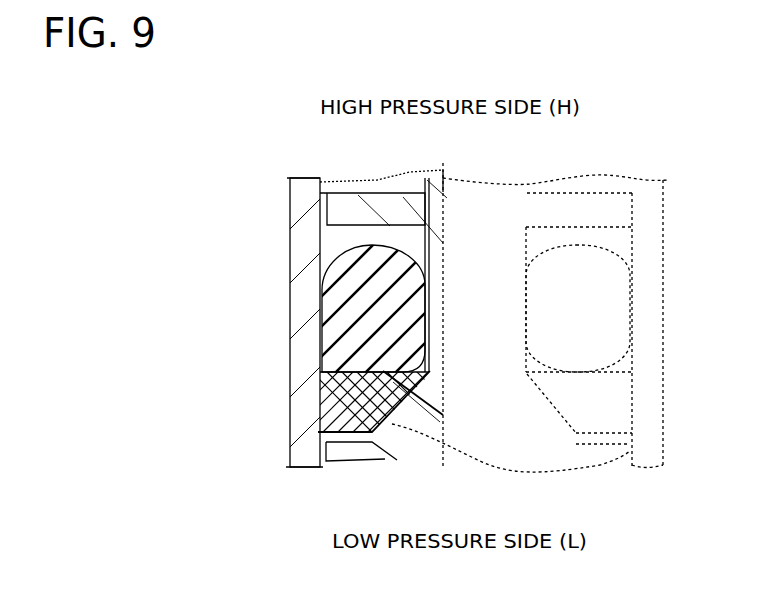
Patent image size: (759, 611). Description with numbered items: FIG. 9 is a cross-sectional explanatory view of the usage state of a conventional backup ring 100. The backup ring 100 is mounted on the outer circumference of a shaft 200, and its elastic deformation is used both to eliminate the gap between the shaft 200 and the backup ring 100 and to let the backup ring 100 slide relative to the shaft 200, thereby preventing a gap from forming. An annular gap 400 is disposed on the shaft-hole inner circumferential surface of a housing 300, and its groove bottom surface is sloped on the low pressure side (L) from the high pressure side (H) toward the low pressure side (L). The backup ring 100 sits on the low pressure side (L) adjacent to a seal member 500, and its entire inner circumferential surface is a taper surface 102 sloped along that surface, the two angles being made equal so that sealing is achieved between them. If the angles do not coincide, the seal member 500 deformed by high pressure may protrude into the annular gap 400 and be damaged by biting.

The backup ring 100 is at (318, 405).
The taper surface 102 is at (380, 432).
The shaft 200 is at (390, 435).
The housing 300 is at (308, 217).
The annular gap 400 is at (320, 262).
The seal member 500 is at (318, 302).